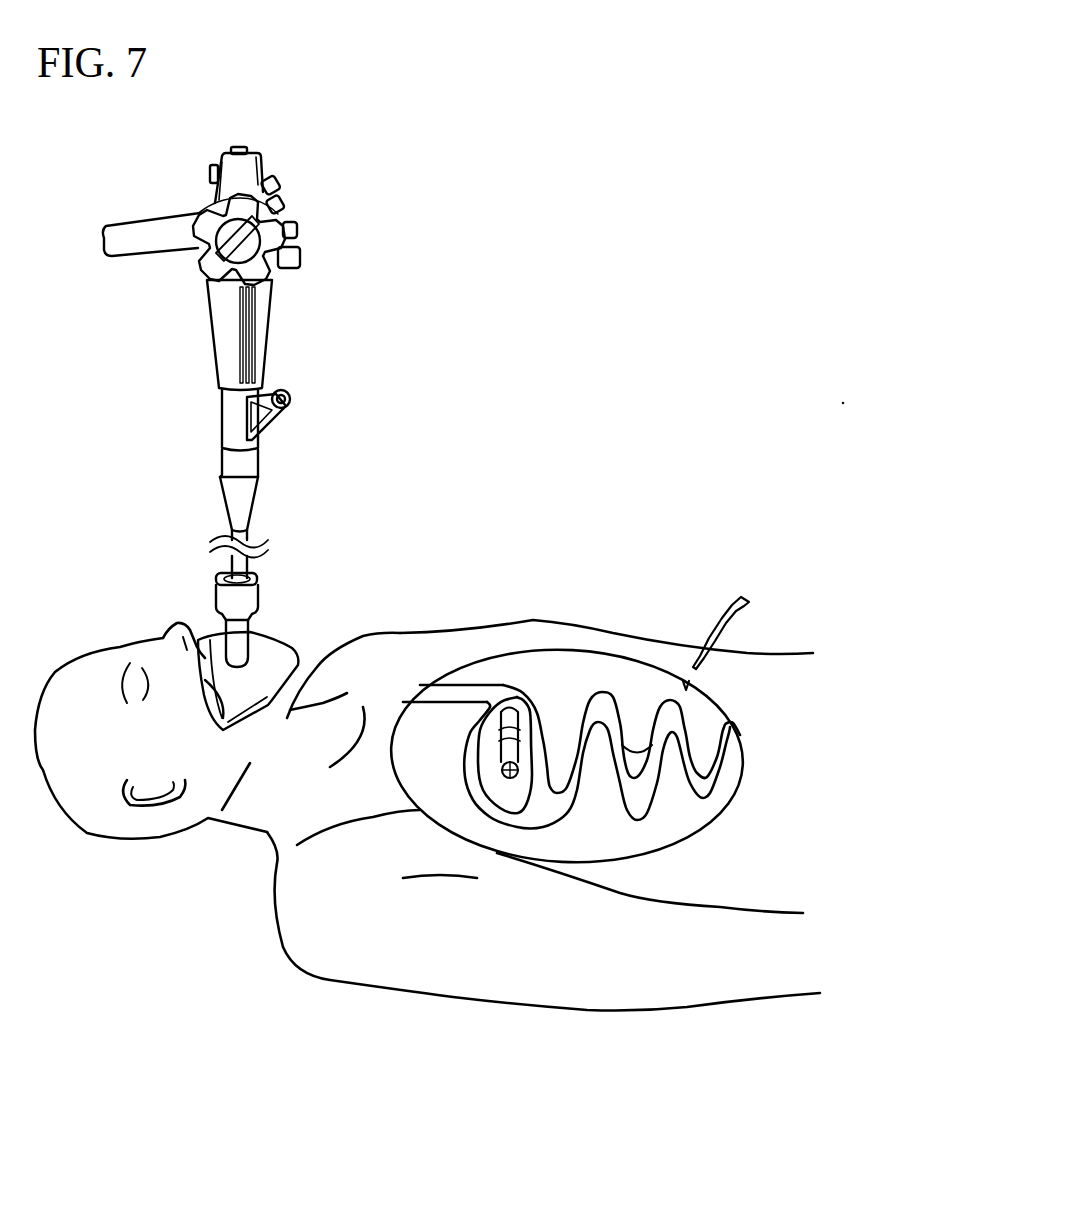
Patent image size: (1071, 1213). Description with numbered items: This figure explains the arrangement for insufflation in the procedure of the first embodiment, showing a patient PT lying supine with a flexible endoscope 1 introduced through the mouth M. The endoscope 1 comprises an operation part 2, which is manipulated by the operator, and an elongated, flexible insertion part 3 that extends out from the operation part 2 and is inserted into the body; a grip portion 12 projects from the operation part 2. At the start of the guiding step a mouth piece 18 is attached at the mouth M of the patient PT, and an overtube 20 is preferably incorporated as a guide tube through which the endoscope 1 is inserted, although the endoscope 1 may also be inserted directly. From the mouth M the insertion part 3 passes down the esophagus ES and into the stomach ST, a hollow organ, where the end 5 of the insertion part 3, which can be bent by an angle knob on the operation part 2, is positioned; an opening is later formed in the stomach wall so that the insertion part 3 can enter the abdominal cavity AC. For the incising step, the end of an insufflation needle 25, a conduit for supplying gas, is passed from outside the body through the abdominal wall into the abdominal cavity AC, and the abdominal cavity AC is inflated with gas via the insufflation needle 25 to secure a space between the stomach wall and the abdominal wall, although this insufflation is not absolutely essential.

The flexible endoscope 1 is at (231, 362).
The operation part 2 is at (267, 361).
The insertion part 3 is at (250, 565).
The end of the insertion part 5 is at (505, 765).
The grip portion 12 is at (155, 230).
The mouth piece 18 is at (257, 677).
The overtube 20 is at (250, 599).
The insufflation needle 25 is at (730, 612).
The patient PT is at (93, 643).
The mouth M is at (210, 700).
The esophagus ES is at (465, 694).
The stomach ST is at (538, 749).
The abdominal cavity AC is at (630, 686).